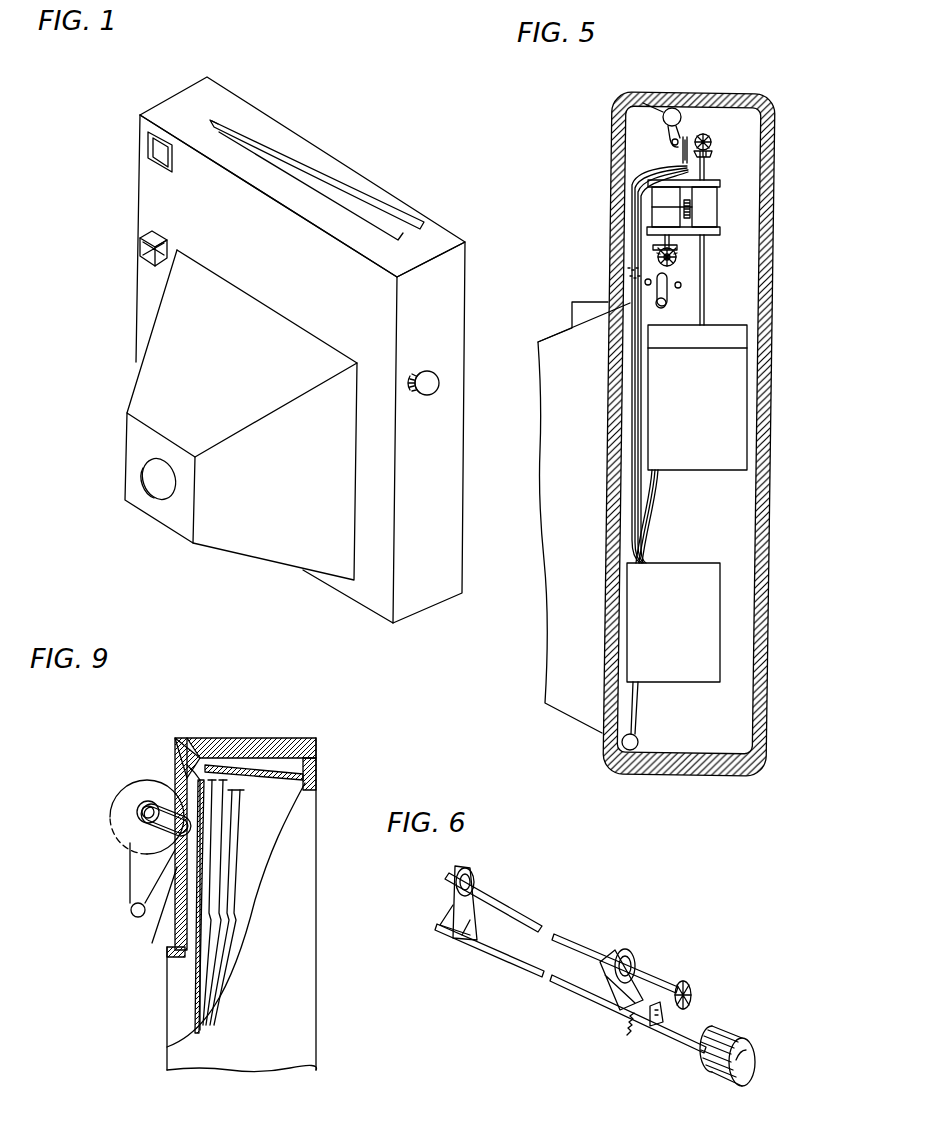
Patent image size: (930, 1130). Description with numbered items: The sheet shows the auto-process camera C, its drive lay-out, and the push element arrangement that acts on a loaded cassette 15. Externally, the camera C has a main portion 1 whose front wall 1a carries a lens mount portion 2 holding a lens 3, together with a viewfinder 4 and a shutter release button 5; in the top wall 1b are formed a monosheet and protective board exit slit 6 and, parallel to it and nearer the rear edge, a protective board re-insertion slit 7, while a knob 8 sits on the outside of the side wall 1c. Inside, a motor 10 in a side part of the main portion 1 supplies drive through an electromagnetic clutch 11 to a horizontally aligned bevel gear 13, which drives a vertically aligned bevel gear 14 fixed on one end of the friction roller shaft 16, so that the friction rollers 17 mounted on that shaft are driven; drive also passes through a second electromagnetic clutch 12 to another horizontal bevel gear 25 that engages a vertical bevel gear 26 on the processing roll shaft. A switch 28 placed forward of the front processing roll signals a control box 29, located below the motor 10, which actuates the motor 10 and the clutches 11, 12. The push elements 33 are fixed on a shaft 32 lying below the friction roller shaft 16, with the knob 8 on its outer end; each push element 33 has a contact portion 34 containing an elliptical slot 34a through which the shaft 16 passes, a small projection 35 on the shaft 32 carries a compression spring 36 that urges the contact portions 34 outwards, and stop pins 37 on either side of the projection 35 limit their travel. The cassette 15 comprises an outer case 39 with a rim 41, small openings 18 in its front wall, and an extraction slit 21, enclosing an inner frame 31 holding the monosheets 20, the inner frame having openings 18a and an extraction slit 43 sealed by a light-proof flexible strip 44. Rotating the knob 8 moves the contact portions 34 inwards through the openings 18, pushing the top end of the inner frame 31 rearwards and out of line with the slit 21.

In FIG. 1, the main portion 1 is at (312, 361).
In FIG. 1, the front wall 1a is at (363, 596).
In FIG. 1, the top wall 1b is at (437, 236).
In FIG. 1, the side wall 1c is at (438, 604).
In FIG. 1, the lens mount portion 2 is at (267, 542).
In FIG. 1, the lens 3 is at (160, 477).
In FIG. 1, the viewfinder 4 is at (160, 146).
In FIG. 1, the shutter release button 5 is at (145, 251).
In FIG. 1, the monosheet and protective board exit slit 6 is at (214, 121).
In FIG. 1, the protective board re-insertion slit 7 is at (268, 118).
In FIG. 1, the knob 8 is at (436, 382).
In FIG. 6, the knob 8 is at (742, 1068).
In FIG. 1, the auto-process camera C is at (133, 345).
In FIG. 5, the motor 10 is at (727, 427).
In FIG. 5, the electromagnetic clutch 11 is at (662, 205).
In FIG. 5, the electromagnetic clutch 12 is at (706, 211).
In FIG. 5, the horizontally aligned bevel gear 13 is at (658, 241).
In FIG. 5, the vertically aligned bevel gear 14 is at (654, 257).
In FIG. 5, the horizontally aligned bevel gear 25 is at (711, 163).
In FIG. 5, the vertically aligned bevel gear 26 is at (713, 140).
In FIG. 5, the switch 28 is at (706, 127).
In FIG. 5, the control box 29 is at (702, 625).
In FIG. 5, the small projection 35 is at (668, 294).
In FIG. 6, the small projection 35 is at (662, 1020).
In FIG. 5, the compression spring 36 is at (632, 277).
In FIG. 6, the compression spring 36 is at (636, 1036).
In FIG. 5, the stop pins 37 is at (681, 285).
In FIG. 9, the cassette 15 is at (290, 957).
In FIG. 9, the friction roller shaft 16 is at (148, 812).
In FIG. 6, the friction roller shaft 16 is at (510, 915).
In FIG. 9, the small rectangular openings 18 is at (148, 910).
In FIG. 9, the small rectangular openings 18a is at (200, 853).
In FIG. 9, the monosheets 20 is at (232, 822).
In FIG. 9, the extraction slit 21 is at (186, 742).
In FIG. 9, the inner frame 31 is at (200, 893).
In FIG. 9, the shaft 32 is at (131, 910).
In FIG. 6, the shaft 32 is at (687, 1044).
In FIG. 9, the push elements 33 is at (137, 868).
In FIG. 6, the push elements 33 is at (463, 936).
In FIG. 9, the contact portion 34 is at (170, 816).
In FIG. 6, the contact portion 34 is at (447, 903).
In FIG. 9, the elliptical slot 34a is at (160, 800).
In FIG. 9, the outer case 39 is at (178, 746).
In FIG. 9, the rim 41 is at (170, 957).
In FIG. 9, the extraction slit 43 is at (212, 758).
In FIG. 9, the light-proof flexible strip 44 is at (198, 760).
In FIG. 6, the friction rollers 17 is at (466, 866).